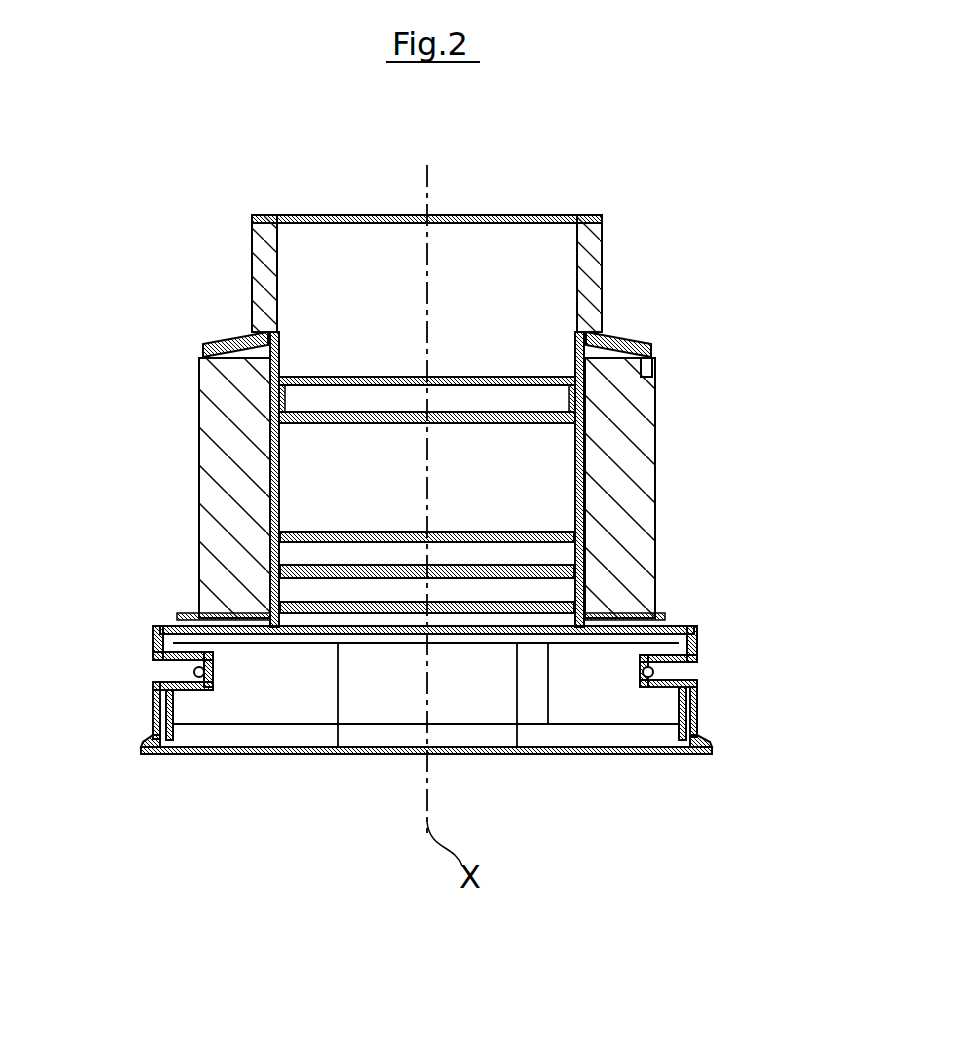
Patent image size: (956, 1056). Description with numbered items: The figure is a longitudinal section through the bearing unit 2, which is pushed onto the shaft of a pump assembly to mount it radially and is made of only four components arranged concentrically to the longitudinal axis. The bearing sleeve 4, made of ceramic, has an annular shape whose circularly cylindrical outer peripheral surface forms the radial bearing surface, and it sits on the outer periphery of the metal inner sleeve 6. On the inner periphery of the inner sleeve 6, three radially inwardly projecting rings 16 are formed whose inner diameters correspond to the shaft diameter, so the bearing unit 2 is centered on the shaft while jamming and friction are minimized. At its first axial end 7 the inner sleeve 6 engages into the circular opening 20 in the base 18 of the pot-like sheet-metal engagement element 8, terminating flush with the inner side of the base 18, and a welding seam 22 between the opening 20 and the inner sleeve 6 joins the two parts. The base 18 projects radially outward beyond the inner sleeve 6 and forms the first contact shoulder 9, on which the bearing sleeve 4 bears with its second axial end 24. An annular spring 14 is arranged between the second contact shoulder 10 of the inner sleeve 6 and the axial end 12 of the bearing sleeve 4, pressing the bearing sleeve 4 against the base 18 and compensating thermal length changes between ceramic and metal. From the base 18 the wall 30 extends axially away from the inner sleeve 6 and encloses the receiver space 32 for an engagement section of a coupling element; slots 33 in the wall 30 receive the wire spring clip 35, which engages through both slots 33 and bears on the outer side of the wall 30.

The bearing unit 2 is at (516, 212).
The bearing sleeve 4 is at (212, 415).
The inner sleeve 6 is at (262, 270).
The first axial end 7 is at (571, 650).
The engagement element 8 is at (427, 727).
The first contact shoulder 9 is at (663, 612).
The second contact shoulder 10 is at (597, 332).
The axial end of the bearing sleeve 12 is at (653, 376).
The annular spring 14 is at (236, 336).
The radially inwardly projecting rings 16 is at (556, 396).
The base 18 is at (190, 615).
The circular opening 20 is at (250, 636).
The welding seam 22 is at (305, 636).
The second axial end 24 is at (236, 610).
The wall 30 is at (705, 712).
The receiver space 32 is at (297, 706).
The slots 33 is at (206, 690).
The spring clip 35 is at (193, 672).